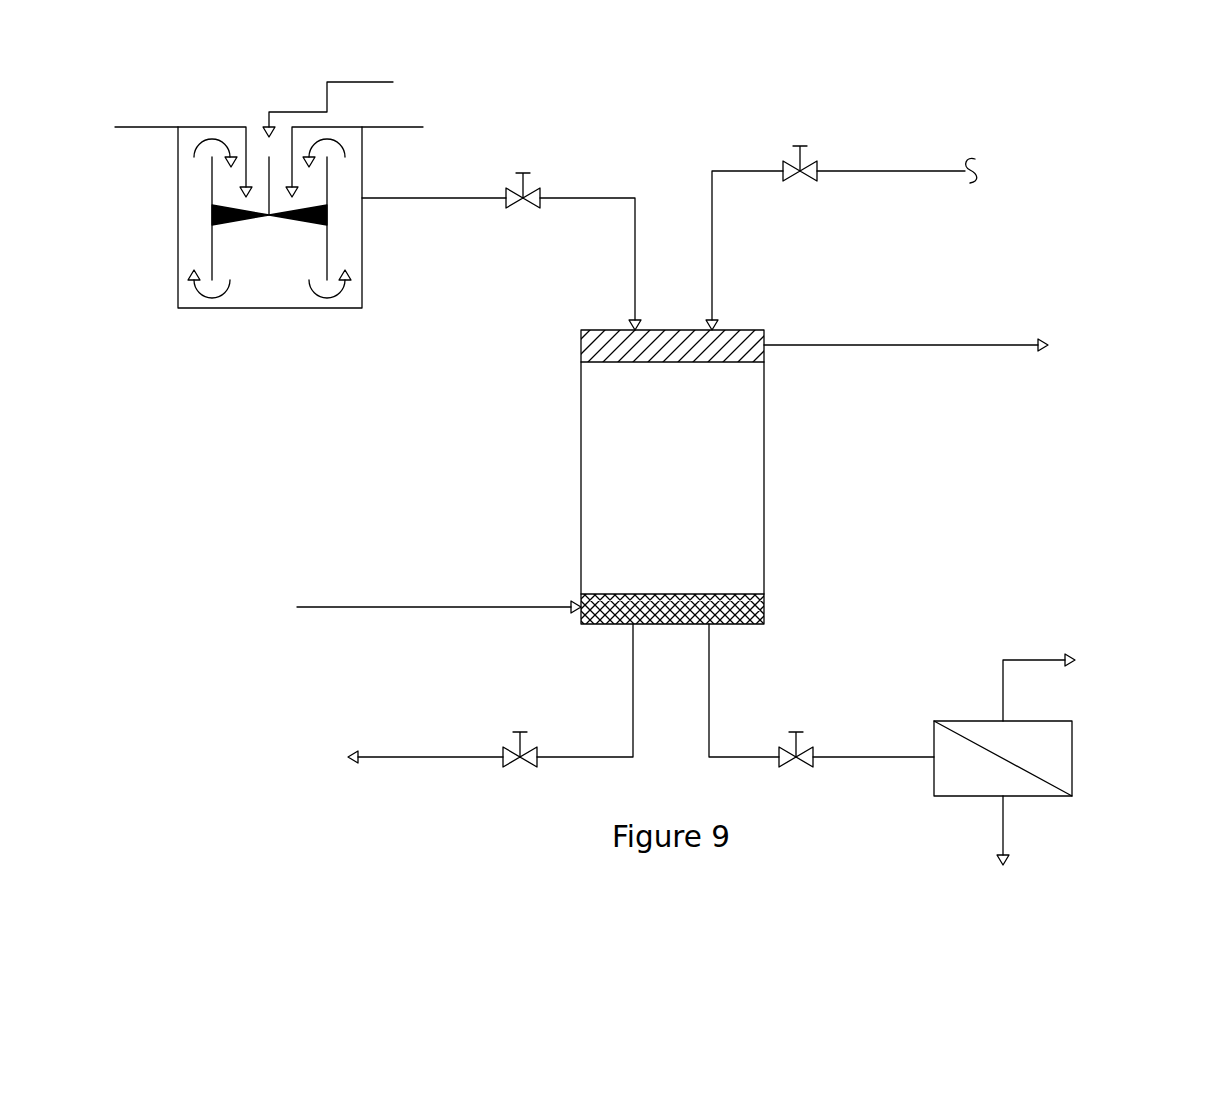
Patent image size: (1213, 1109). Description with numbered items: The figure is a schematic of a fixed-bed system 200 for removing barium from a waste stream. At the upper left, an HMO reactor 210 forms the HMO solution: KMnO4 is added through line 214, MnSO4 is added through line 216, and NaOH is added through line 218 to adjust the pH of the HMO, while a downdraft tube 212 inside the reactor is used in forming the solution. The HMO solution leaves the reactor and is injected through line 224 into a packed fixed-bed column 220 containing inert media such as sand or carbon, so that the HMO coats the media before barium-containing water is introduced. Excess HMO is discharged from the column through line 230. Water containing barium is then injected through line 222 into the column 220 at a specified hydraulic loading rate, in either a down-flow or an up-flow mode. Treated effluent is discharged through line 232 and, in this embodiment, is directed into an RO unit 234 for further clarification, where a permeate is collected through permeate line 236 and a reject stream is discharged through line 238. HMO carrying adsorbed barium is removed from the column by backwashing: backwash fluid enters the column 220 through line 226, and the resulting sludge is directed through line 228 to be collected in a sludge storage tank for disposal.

The fixed-bed system 200 is at (1043, 113).
The HMO reactor 210 is at (177, 251).
The downdraft tube 212 is at (227, 195).
The line 214 is at (143, 127).
The line 216 is at (387, 125).
The line 218 is at (352, 80).
The packed fixed-bed column 220 is at (581, 438).
The line 222 is at (870, 171).
The line 224 is at (575, 198).
The line 226 is at (417, 607).
The line 228 is at (900, 345).
The line 230 is at (390, 757).
The line 232 is at (710, 697).
The RO unit 234 is at (1072, 792).
The permeate line 236 is at (1027, 658).
The line 238 is at (1002, 833).